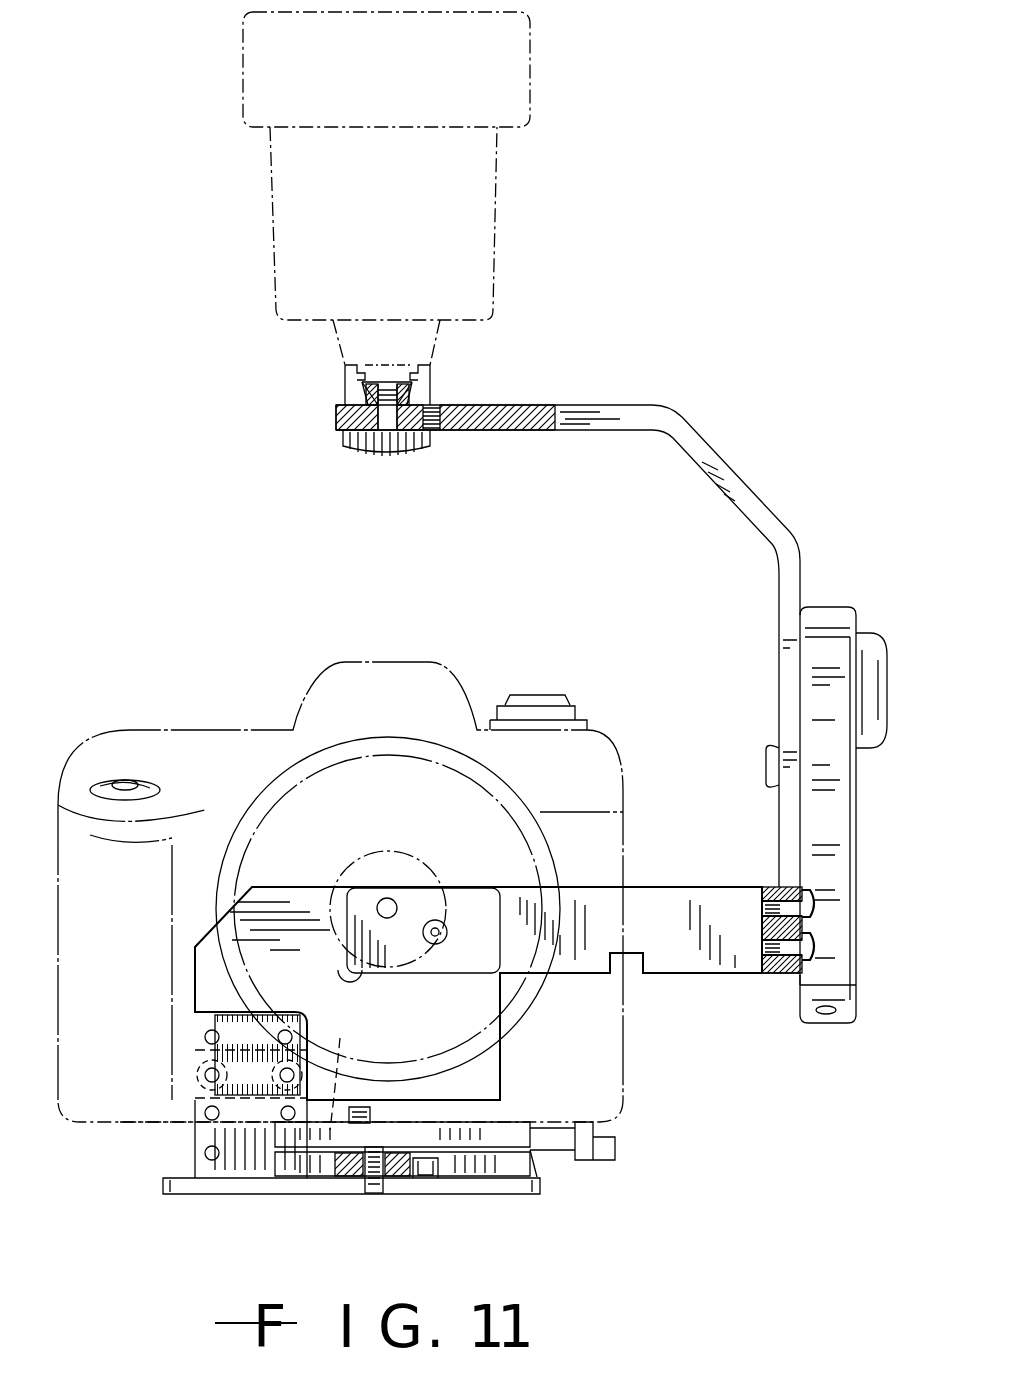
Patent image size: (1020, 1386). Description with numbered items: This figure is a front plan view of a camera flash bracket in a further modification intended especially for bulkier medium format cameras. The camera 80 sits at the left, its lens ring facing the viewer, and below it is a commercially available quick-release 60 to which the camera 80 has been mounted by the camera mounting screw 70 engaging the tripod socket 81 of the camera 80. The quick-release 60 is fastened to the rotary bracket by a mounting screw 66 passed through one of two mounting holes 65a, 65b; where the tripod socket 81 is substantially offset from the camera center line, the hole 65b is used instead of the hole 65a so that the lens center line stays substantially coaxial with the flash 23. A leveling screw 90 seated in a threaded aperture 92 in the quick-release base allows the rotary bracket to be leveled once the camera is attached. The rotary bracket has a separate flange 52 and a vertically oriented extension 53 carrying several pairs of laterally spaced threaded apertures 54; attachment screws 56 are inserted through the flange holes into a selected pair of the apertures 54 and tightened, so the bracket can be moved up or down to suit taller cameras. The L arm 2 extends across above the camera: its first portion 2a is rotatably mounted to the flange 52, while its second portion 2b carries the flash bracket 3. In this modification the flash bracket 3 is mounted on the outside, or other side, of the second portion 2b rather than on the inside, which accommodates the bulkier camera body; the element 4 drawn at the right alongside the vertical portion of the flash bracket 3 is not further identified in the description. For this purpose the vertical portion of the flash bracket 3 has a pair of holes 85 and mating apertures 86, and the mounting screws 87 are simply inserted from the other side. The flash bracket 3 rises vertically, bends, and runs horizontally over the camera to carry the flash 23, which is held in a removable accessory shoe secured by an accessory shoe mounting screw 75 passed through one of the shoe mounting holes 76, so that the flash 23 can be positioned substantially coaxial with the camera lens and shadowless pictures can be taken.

The flash 23 is at (497, 198).
The shoe mounting holes 76 is at (425, 405).
The accessory shoe mounting screw 75 is at (385, 458).
The flash bracket 3 is at (725, 455).
The grip / bracket 4 is at (838, 632).
The camera 80 is at (190, 745).
The flange 52 is at (303, 895).
The L arm 2 is at (637, 882).
The first portion of L arm 2a is at (575, 887).
The second portion of L arm 2b is at (770, 975).
The holes 85 is at (780, 865).
The mating apertures 86 is at (770, 985).
The mounting screws 87 is at (818, 948).
The vertically oriented extension 53 is at (222, 1020).
The threaded apertures 54 is at (205, 1120).
The attachment screws 56 is at (200, 1077).
The camera mounting screw 70 is at (340, 1066).
The tripod socket 81 is at (370, 1110).
The quick-release 60 is at (600, 1190).
The mounting hole 65a is at (455, 1190).
The mounting hole 65b is at (200, 1186).
The threaded aperture 92 is at (350, 1168).
The leveling screw 90 is at (373, 1193).
The mounting screw 66 is at (425, 1188).